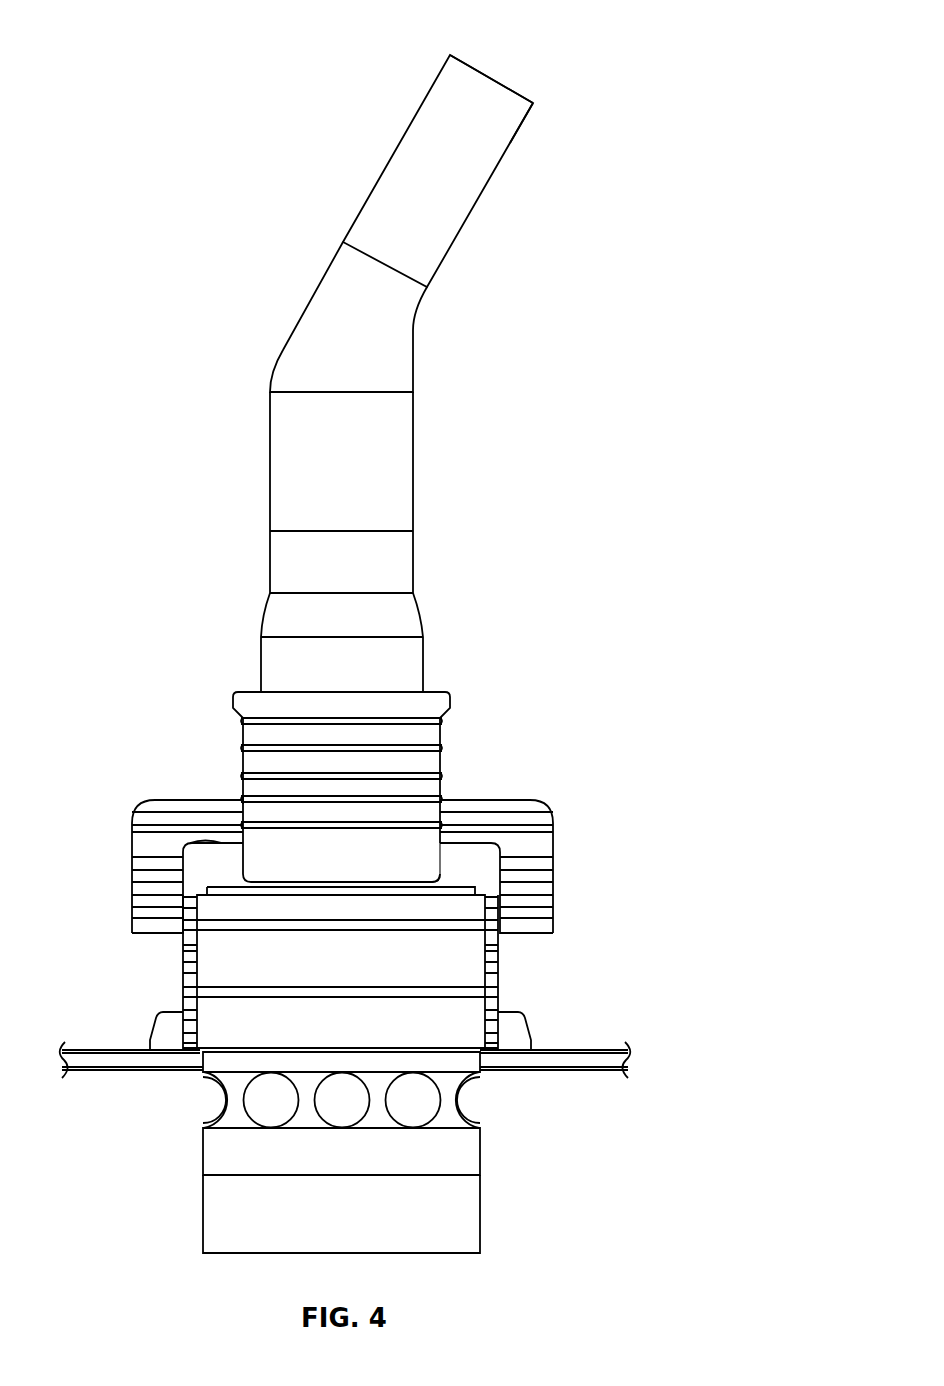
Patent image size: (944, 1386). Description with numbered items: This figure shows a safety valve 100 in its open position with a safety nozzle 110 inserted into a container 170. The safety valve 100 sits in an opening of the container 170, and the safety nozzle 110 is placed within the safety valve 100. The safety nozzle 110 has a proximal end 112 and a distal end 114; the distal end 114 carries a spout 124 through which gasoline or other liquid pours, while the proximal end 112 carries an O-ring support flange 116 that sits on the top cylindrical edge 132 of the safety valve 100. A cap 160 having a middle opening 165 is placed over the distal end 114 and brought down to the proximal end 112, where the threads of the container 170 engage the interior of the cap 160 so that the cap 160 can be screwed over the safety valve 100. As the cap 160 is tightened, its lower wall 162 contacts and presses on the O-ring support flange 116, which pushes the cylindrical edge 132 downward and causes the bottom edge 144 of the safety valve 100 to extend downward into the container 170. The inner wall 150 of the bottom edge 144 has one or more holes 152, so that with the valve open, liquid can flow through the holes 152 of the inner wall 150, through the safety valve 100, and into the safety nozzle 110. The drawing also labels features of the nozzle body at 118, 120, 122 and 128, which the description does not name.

The safety valve 100 is at (245, 733).
The safety nozzle 110 is at (433, 348).
The proximal end 112 is at (450, 862).
The distal end 114 is at (528, 112).
The O-ring support flange 116 is at (453, 886).
The riser portion 118 is at (402, 552).
The bend portion 120 is at (388, 328).
The angled portion 122 is at (474, 145).
The spout 124 is at (498, 78).
The outlet edge 128 is at (463, 62).
The top cylindrical edge 132 is at (480, 896).
The bottom edge 144 is at (468, 1228).
The inner wall 150 is at (468, 1158).
The holes 152 is at (415, 1103).
The cap 160 is at (132, 838).
The lower wall 162 is at (222, 835).
The middle opening 165 is at (243, 800).
The container 170 is at (105, 1062).